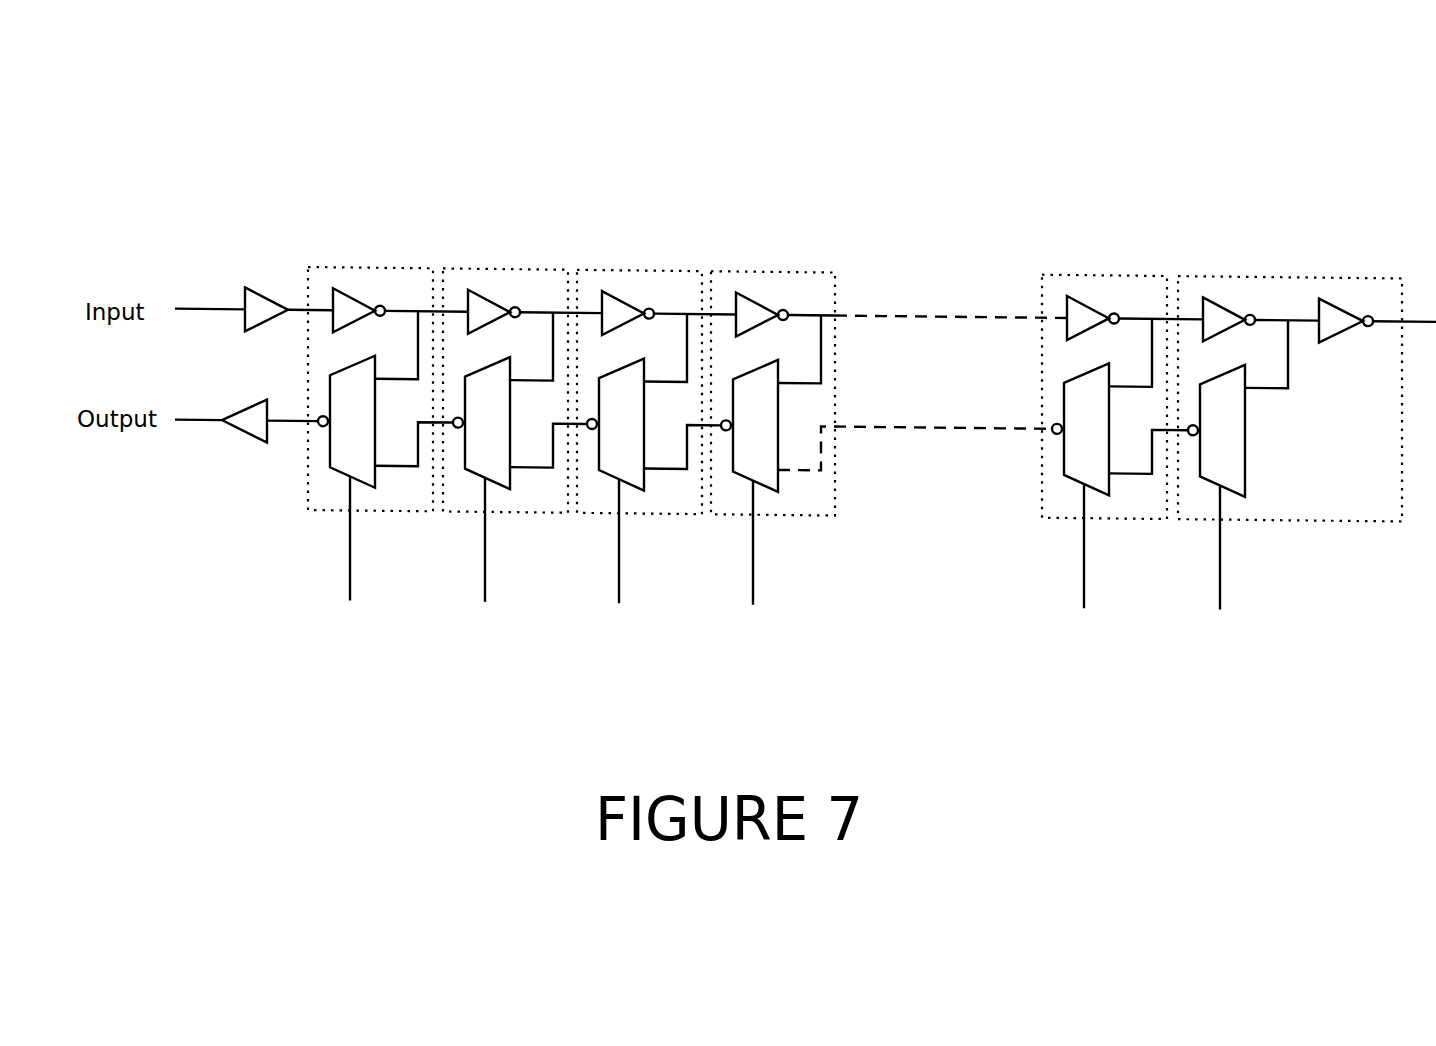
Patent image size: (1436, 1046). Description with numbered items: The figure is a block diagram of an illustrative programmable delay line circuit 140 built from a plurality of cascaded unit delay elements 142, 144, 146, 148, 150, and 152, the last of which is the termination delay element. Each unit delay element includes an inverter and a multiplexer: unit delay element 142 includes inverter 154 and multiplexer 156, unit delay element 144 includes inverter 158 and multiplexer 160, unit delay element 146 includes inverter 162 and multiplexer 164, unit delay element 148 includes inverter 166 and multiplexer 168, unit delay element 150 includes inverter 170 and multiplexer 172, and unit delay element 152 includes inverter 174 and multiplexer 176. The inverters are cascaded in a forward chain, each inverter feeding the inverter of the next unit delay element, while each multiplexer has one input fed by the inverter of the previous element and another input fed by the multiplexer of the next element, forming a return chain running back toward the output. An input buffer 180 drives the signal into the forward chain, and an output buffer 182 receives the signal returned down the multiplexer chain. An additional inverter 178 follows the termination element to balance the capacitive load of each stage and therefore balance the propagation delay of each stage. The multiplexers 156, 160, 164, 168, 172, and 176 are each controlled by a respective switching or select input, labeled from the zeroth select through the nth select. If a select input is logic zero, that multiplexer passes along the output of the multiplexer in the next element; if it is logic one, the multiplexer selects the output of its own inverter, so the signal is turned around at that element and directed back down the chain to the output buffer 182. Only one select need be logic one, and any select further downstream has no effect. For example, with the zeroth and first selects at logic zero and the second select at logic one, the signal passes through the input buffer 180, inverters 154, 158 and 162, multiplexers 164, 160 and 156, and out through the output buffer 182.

The programmable delay line circuit 140 is at (805, 374).
The unit delay element 142 is at (388, 432).
The unit delay element 144 is at (522, 433).
The unit delay element 146 is at (656, 435).
The unit delay element 148 is at (889, 437).
The unit delay element 150 is at (1122, 438).
The unit delay element 152 is at (1307, 423).
The inverter 154 is at (400, 326).
The multiplexer 156 is at (373, 434).
The inverter 158 is at (535, 328).
The multiplexer 160 is at (508, 434).
The inverter 162 is at (669, 329).
The multiplexer 164 is at (642, 434).
The inverter 166 is at (901, 332).
The multiplexer 168 is at (776, 434).
The inverter 170 is at (1135, 334).
The multiplexer 172 is at (1107, 434).
The inverter 174 is at (1261, 335).
The multiplexer 176 is at (1243, 434).
The inverter 178 is at (1377, 341).
The input buffer 180 is at (254, 280).
The output buffer 182 is at (246, 396).